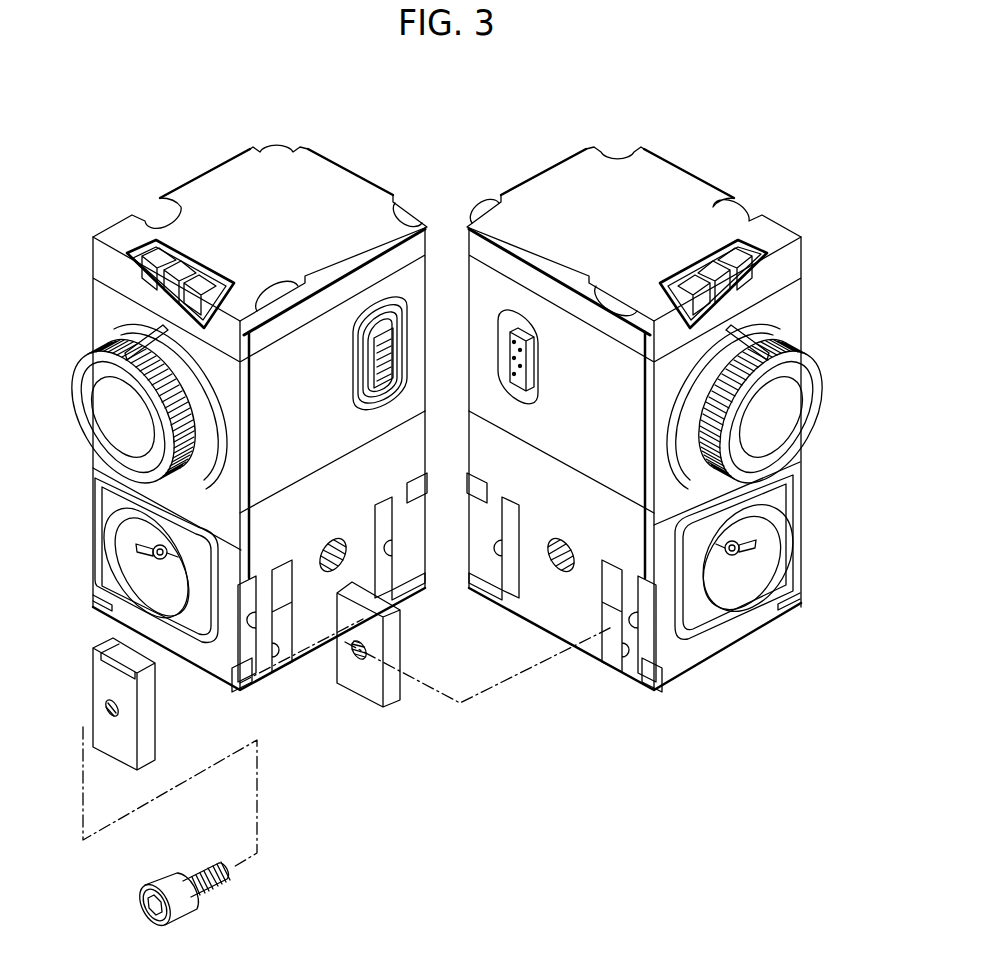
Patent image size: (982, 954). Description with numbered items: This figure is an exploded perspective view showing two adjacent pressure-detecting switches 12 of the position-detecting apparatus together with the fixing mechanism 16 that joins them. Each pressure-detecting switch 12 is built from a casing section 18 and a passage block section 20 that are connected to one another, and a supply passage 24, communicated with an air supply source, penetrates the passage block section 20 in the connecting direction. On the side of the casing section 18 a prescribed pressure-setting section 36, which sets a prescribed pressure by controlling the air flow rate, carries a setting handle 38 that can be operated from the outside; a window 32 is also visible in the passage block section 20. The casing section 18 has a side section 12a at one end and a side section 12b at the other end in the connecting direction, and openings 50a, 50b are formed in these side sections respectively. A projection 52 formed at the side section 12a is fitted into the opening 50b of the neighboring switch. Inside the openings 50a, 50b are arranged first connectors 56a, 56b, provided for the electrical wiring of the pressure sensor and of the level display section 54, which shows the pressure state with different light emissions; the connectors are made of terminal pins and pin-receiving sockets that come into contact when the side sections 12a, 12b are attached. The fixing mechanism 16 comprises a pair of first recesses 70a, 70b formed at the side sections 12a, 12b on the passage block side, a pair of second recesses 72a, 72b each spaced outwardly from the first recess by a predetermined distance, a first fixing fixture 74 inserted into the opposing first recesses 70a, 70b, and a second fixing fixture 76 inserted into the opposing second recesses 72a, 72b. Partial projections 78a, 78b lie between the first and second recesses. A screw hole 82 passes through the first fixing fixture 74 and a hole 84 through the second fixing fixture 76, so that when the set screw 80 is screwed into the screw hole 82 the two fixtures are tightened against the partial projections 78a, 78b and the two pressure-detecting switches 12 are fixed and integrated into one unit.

The pressure-detecting switch 12 is at (449, 421).
The side section 12a is at (323, 330).
The side section 12b is at (558, 333).
The fixing mechanism 16 is at (391, 673).
The casing section 18 is at (91, 293).
The passage block section 20 is at (92, 542).
The supply passage 24 is at (333, 548).
The indicator window 32 is at (130, 566).
The prescribed pressure-setting section 36 is at (90, 353).
The setting handle 38 is at (88, 389).
The opening 50a is at (370, 413).
The opening 50b is at (533, 403).
The projection 52 is at (405, 325).
The level display section 54 is at (740, 257).
The first connector 56a is at (378, 377).
The first connector 56b is at (527, 352).
The first recess 70a is at (387, 516).
The first recess 70b is at (510, 582).
The second recess 72a is at (428, 490).
The second recess 72b is at (490, 497).
The first fixing fixture 74 is at (388, 700).
The second fixing fixture 76 is at (126, 704).
The partial projection 78a is at (264, 592).
The partial projection 78b is at (487, 578).
The set screw 80 is at (155, 886).
The screw hole 82 is at (396, 653).
The hole 84 is at (104, 706).